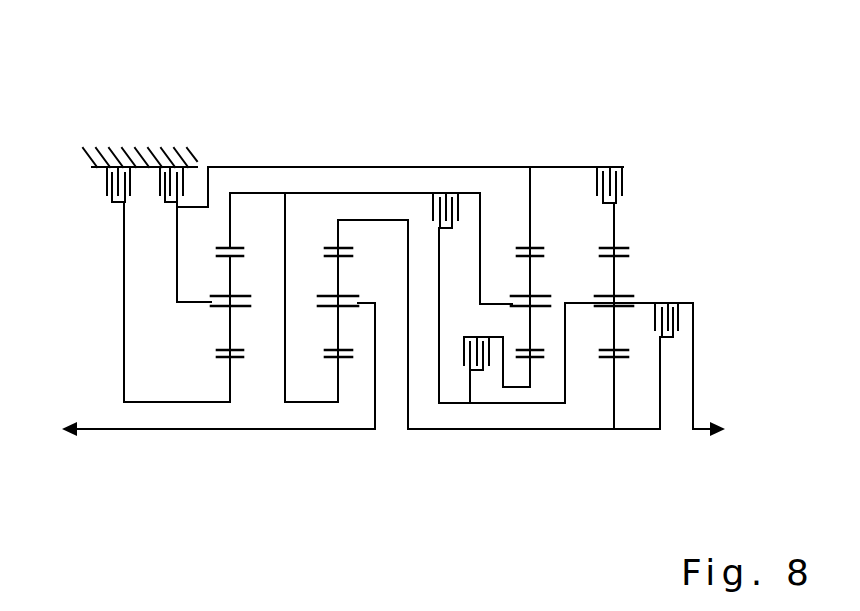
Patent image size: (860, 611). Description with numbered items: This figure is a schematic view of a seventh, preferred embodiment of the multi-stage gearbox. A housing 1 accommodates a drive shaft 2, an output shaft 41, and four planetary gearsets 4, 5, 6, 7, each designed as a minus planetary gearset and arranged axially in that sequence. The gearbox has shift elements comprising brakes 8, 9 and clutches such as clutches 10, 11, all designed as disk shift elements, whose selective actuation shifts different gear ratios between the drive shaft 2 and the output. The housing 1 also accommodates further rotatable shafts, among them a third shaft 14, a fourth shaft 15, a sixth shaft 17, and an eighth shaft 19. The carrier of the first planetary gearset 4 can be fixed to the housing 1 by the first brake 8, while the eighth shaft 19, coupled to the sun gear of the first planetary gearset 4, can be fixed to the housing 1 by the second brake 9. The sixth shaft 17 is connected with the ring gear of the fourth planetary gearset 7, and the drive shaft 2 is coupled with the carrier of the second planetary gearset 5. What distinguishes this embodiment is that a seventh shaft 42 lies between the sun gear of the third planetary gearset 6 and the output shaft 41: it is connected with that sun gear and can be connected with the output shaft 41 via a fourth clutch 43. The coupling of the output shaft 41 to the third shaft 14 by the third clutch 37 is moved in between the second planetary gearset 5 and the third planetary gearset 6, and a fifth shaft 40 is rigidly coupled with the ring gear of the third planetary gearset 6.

The housing 1 is at (127, 155).
The drive shaft 2 is at (293, 429).
The first planetary gearset 4 is at (232, 163).
The second planetary gearset 5 is at (340, 163).
The third planetary gearset 6 is at (531, 163).
The fourth planetary gearset 7 is at (615, 163).
The first brake 8 is at (173, 173).
The second brake 9 is at (107, 190).
The clutch 10 is at (662, 327).
The clutch 11 is at (620, 185).
The third shaft 14 is at (264, 190).
The fourth shaft 15 is at (428, 429).
The sixth shaft 17 is at (613, 228).
The eighth shaft 19 is at (124, 340).
The third clutch 37 is at (445, 213).
The fifth shaft 40 is at (307, 168).
The output shaft 41 is at (692, 368).
The seventh shaft 42 is at (513, 390).
The fourth clutch 43 is at (478, 345).